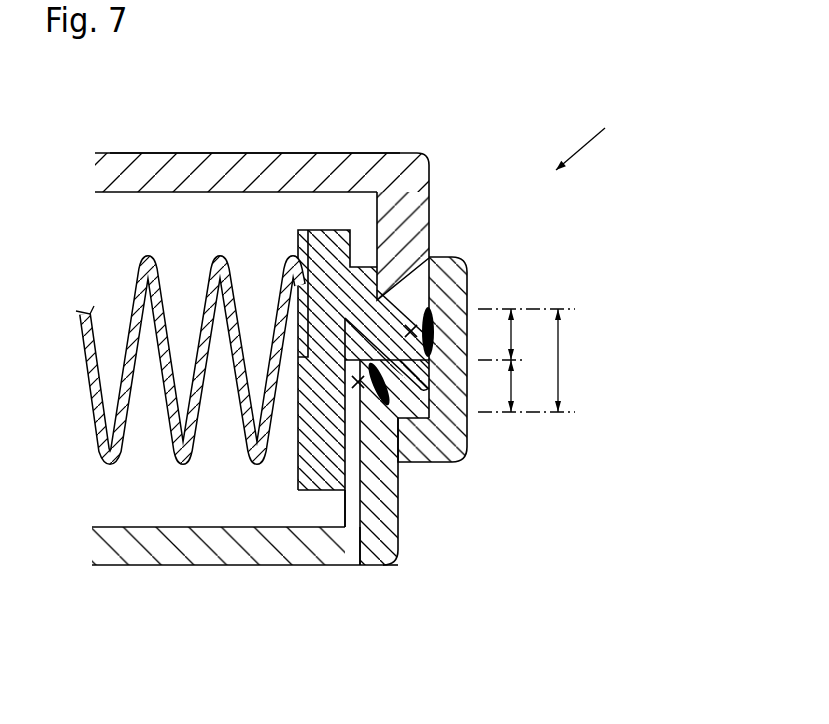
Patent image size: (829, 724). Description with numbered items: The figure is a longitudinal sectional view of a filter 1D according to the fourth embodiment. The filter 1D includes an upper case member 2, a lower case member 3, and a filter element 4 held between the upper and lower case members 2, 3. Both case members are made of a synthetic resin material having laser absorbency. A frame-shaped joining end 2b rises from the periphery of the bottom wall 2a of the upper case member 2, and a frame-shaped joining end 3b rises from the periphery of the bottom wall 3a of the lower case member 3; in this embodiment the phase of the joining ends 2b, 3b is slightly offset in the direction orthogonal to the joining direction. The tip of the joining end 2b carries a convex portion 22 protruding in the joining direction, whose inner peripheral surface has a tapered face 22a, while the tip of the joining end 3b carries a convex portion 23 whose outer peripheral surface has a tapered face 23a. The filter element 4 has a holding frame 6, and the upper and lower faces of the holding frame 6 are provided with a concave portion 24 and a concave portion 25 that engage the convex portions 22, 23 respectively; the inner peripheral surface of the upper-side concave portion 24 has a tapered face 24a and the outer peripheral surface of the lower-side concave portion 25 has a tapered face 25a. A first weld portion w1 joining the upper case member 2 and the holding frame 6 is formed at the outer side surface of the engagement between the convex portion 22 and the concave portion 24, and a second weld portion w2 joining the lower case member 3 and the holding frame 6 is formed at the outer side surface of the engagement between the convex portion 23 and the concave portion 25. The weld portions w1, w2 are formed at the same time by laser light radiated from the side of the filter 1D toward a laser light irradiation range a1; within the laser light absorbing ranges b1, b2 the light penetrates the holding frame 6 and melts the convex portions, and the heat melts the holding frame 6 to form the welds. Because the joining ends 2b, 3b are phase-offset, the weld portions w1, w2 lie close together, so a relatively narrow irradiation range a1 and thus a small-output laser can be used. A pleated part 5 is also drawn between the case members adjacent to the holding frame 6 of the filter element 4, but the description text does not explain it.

The filter 1D is at (603, 139).
The upper case member 2 is at (128, 152).
The bottom wall 2a is at (175, 153).
The joining end 2b is at (418, 182).
The lower case member 3 is at (157, 566).
The bottom wall 3a is at (220, 553).
The joining end 3b is at (374, 507).
The filter element 4 is at (315, 230).
The coil spring 5 is at (160, 272).
The holding frame 6 is at (297, 243).
The convex portion 22 is at (429, 257).
The tapered face 22a is at (405, 328).
The convex portion 23 is at (374, 527).
The tapered face 23a is at (392, 392).
The concave portion 24 is at (416, 326).
The tapered face 24a is at (411, 331).
The concave portion 25 is at (350, 440).
The tapered face 25a is at (358, 382).
The first weld portion w1 is at (434, 328).
The second weld portion w2 is at (392, 384).
The laser light irradiation range a1 is at (560, 345).
The laser light absorbing range b1 is at (520, 333).
The laser light absorbing range b2 is at (513, 390).